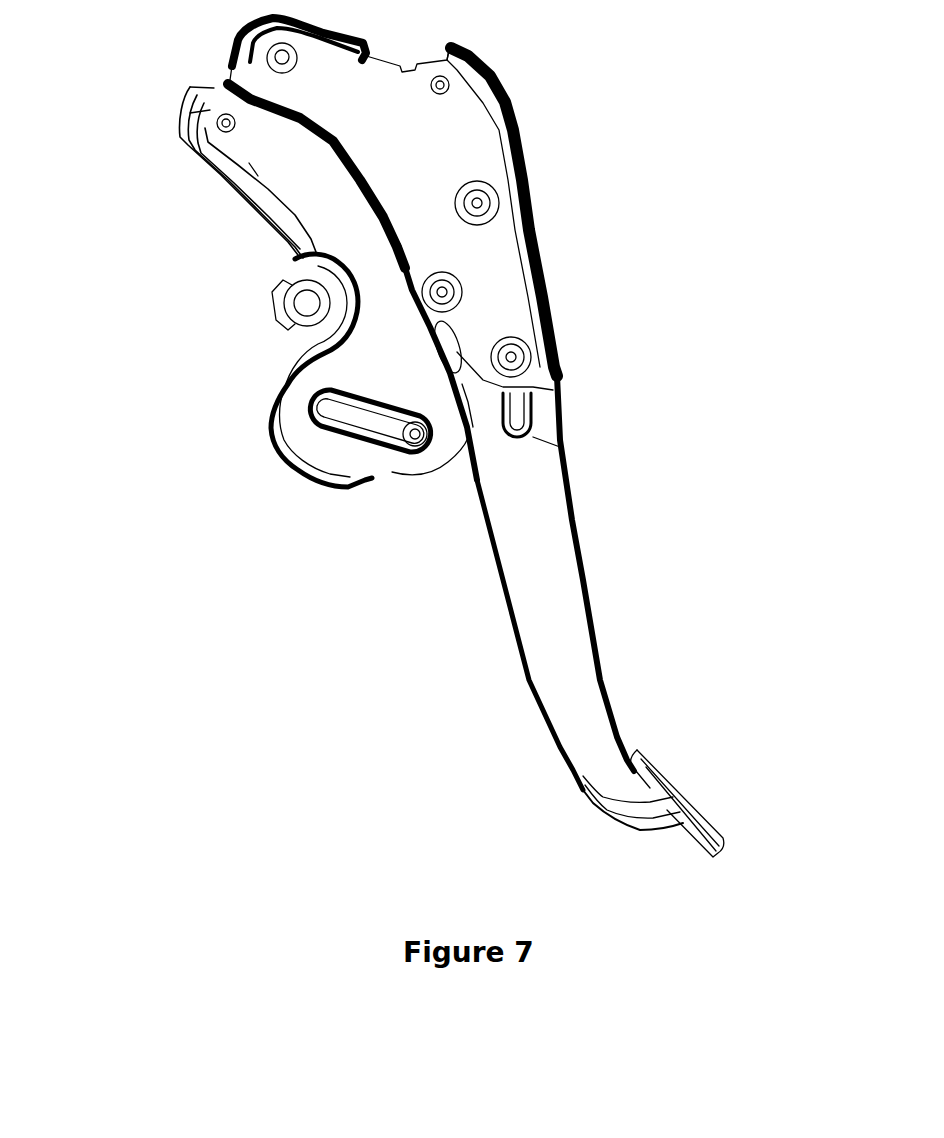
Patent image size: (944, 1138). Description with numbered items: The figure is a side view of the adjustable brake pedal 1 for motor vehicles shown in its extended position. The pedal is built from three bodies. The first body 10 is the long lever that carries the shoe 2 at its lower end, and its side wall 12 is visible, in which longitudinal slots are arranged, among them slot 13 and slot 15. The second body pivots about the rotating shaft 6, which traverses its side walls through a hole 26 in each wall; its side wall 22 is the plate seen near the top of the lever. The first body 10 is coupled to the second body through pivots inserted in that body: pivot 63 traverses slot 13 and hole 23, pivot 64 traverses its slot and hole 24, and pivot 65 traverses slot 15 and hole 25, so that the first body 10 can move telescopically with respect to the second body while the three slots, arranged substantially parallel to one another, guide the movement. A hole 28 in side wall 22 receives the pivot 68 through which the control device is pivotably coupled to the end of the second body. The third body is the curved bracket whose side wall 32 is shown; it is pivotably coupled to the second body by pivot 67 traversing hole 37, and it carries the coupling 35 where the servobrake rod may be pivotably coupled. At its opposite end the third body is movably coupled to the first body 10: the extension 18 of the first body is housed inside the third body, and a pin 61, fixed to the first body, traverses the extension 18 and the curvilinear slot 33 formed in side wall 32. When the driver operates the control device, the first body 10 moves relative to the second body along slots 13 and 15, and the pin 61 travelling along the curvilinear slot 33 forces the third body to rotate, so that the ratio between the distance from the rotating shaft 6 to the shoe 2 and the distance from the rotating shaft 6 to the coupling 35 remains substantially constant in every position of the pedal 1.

The adjustable brake pedal 1 is at (390, 660).
The shoe 2 is at (675, 786).
The rotating shaft 6 is at (279, 54).
The first body 10 is at (580, 673).
The side wall 12 is at (550, 534).
The slot 13 is at (531, 405).
The slot 15 is at (461, 341).
The extension 18 is at (473, 428).
The side wall 22 is at (441, 154).
The hole 23 is at (590, 344).
The hole 24 is at (550, 168).
The hole 25 is at (560, 242).
The hole 26 is at (221, 49).
The hole 28 is at (528, 63).
The side wall 32 is at (361, 229).
The slot 33 is at (352, 416).
The coupling 35 is at (305, 304).
The hole 37 is at (174, 153).
The pin 61 is at (415, 436).
The pivot 63 is at (513, 356).
The pivot 64 is at (480, 202).
The pivot 65 is at (448, 291).
The pivot 67 is at (224, 126).
The pivot 68 is at (444, 84).